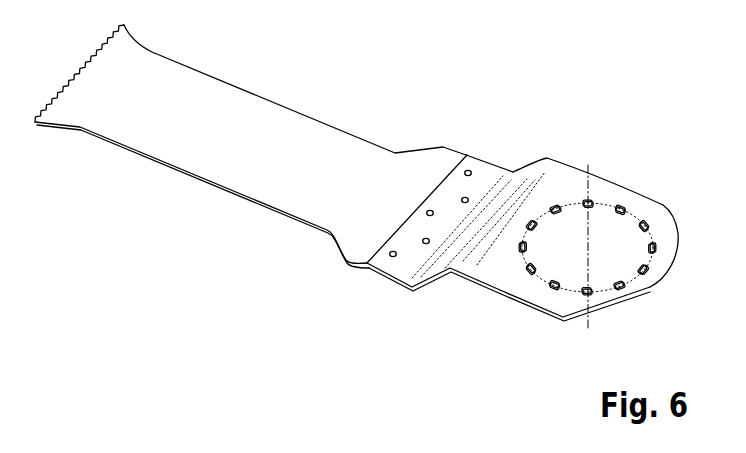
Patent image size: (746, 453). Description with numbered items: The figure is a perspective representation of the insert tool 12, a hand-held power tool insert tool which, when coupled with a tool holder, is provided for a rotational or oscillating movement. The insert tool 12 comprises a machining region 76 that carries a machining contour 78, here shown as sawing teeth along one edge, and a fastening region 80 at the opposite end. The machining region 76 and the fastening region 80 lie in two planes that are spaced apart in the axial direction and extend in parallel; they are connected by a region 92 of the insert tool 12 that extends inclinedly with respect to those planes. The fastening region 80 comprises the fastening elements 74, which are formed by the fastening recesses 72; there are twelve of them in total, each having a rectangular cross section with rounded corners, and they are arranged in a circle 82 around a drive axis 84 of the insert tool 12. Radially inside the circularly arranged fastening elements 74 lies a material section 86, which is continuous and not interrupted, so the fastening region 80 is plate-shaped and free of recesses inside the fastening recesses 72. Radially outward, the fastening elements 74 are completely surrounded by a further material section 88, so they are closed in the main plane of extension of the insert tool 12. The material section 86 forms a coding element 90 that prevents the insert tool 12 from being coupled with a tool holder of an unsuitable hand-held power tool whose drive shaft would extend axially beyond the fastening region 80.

The insert tool 12 is at (248, 140).
The machining region 76 is at (184, 70).
The machining contour 78 is at (75, 78).
The fastening region 80 is at (538, 292).
The circle 82 is at (655, 237).
The drive axis 84 is at (590, 165).
The material section 86 is at (613, 270).
The further material section 88 is at (648, 283).
The coding element 90 is at (577, 218).
The inclined region 92 is at (518, 184).
The fastening recesses 72 is at (596, 200).
The fastening elements 74 is at (647, 222).